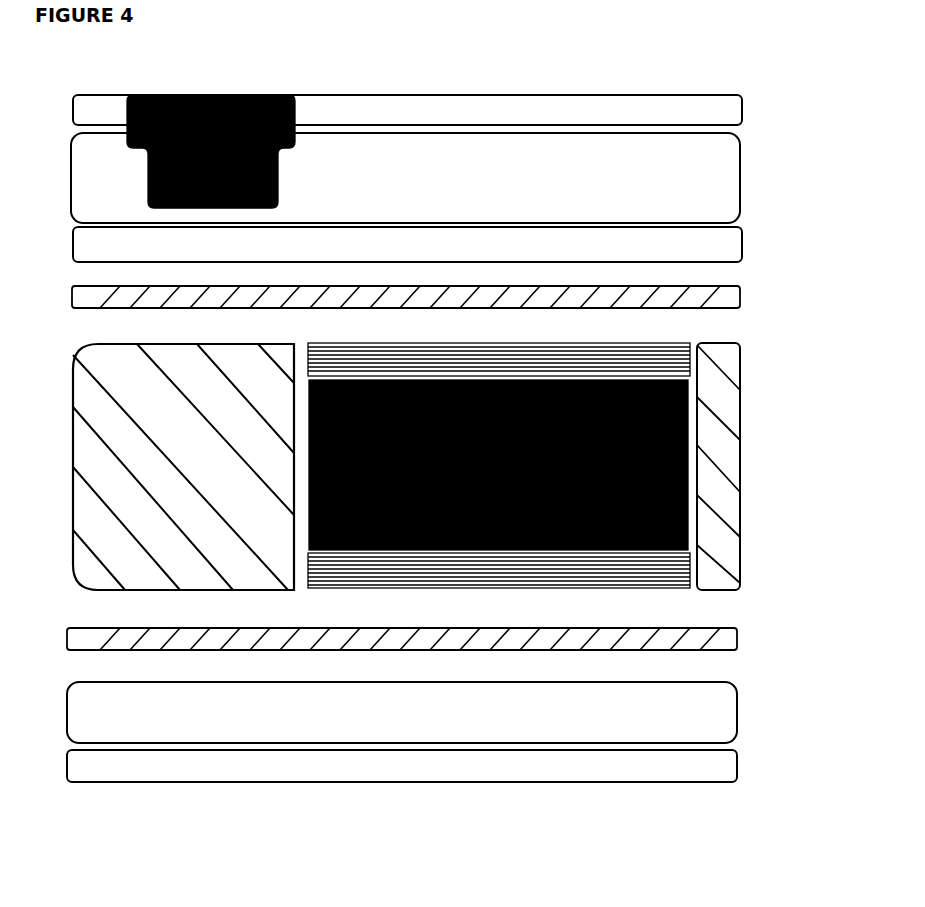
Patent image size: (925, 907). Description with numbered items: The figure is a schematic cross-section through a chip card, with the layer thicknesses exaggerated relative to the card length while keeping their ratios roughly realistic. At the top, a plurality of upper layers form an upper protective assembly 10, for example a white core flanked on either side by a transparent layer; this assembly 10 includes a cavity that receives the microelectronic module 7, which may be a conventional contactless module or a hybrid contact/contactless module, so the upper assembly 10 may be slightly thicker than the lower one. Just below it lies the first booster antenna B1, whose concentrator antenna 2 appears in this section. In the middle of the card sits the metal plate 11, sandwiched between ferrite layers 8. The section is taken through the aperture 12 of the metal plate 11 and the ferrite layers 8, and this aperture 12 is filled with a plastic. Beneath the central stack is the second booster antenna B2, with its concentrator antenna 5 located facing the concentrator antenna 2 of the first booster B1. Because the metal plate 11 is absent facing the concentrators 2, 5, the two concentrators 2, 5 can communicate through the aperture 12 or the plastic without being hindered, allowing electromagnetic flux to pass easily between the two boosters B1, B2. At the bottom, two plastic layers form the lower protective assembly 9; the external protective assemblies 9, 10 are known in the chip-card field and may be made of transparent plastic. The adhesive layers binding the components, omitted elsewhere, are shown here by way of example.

The concentrator antenna 2 is at (424, 308).
The concentrator antenna 5 is at (422, 624).
The microelectronic module 7 is at (242, 97).
The ferrite layers 8 is at (672, 353).
The lower protective assembly 9 is at (755, 668).
The upper protective assembly 10 is at (753, 260).
The metal plate 11 is at (688, 475).
The aperture 12 is at (133, 468).
The first booster antenna B1 is at (726, 298).
The second booster antenna B2 is at (723, 638).